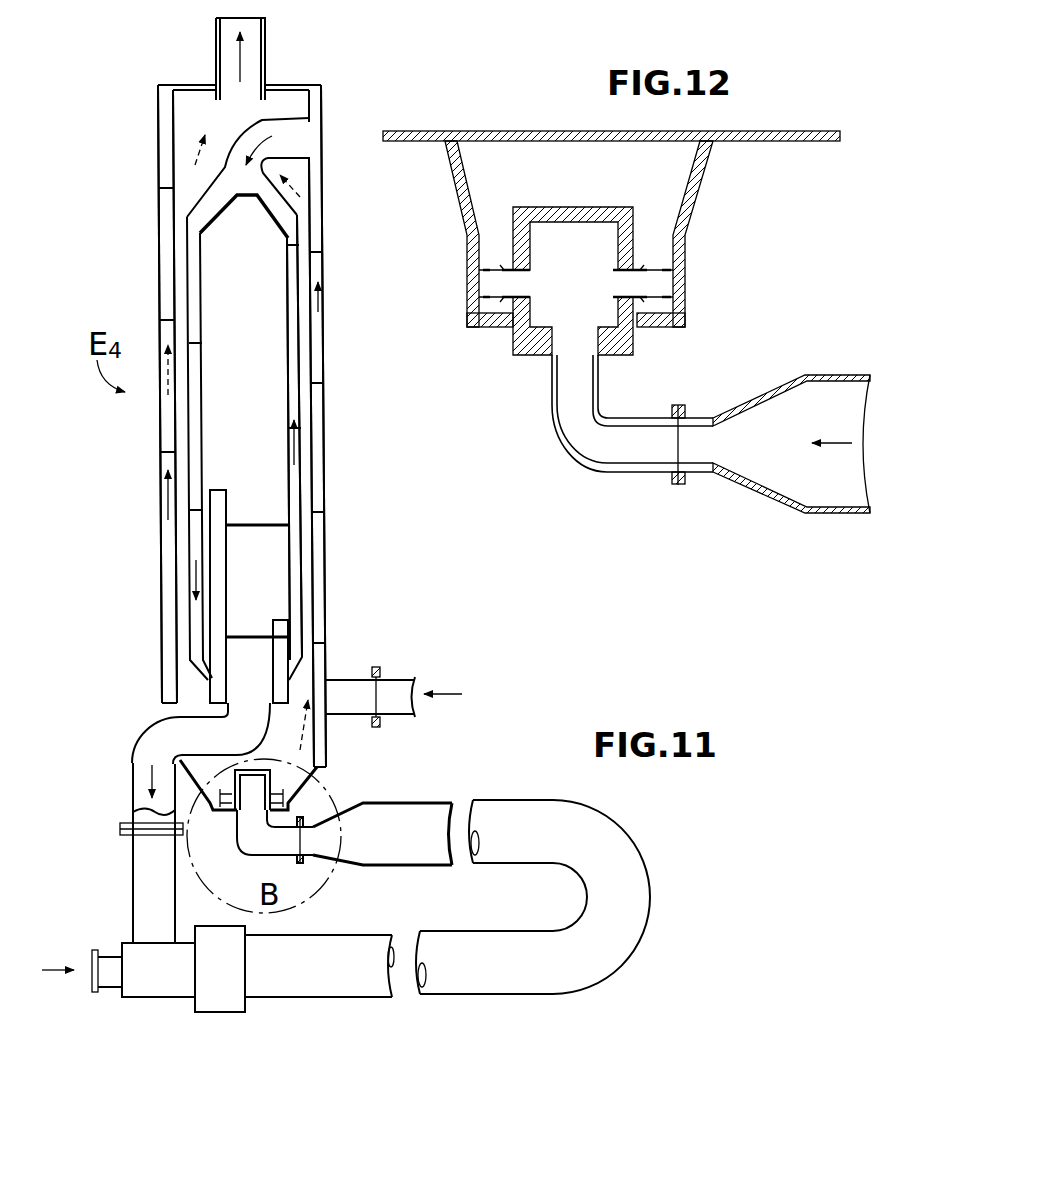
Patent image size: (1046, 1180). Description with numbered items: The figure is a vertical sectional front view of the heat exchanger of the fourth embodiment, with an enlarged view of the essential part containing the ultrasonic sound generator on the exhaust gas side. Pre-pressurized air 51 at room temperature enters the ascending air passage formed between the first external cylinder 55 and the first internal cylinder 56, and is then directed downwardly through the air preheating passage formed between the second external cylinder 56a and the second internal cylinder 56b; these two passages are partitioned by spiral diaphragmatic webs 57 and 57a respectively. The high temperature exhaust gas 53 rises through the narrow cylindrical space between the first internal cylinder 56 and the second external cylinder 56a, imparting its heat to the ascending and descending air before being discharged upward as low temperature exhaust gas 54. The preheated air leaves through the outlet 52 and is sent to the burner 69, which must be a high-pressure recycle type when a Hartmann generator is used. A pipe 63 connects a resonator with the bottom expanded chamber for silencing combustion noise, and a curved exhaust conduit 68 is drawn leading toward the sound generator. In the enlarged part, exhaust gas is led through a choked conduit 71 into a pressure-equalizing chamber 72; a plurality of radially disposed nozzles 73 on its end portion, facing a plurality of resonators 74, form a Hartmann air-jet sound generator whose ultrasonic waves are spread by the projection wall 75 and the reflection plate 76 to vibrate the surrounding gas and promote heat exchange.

In FIG. 11, the pre-pressurized air 51 is at (445, 694).
In FIG. 11, the outlet 52 is at (148, 781).
In FIG. 11, the high temperature exhaust gas 53 is at (358, 837).
In FIG. 11, the low temperature exhaust gas 54 is at (243, 57).
In FIG. 11, the first external cylinder 55 is at (323, 283).
In FIG. 11, the first internal cylinder 56 is at (316, 473).
In FIG. 11, the second external cylinder 56a is at (303, 332).
In FIG. 11, the second internal cylinder 56b is at (292, 402).
In FIG. 11, the spiral diaphragmatic web 57 is at (170, 452).
In FIG. 11, the spiral diaphragmatic web 57a is at (195, 510).
In FIG. 12, the pipe 63 is at (832, 465).
In FIG. 11, the exhaust pipe 68 is at (505, 812).
In FIG. 12, the exhaust pipe 68 is at (823, 378).
In FIG. 11, the burner 69 is at (207, 997).
In FIG. 12, the choked conduit 71 is at (556, 426).
In FIG. 12, the pressure-equalizing chamber 72 is at (563, 233).
In FIG. 12, the nozzles 73 is at (648, 262).
In FIG. 12, the resonators 74 is at (663, 303).
In FIG. 12, the projection wall 75 is at (453, 211).
In FIG. 12, the reflection plate 76 is at (497, 323).